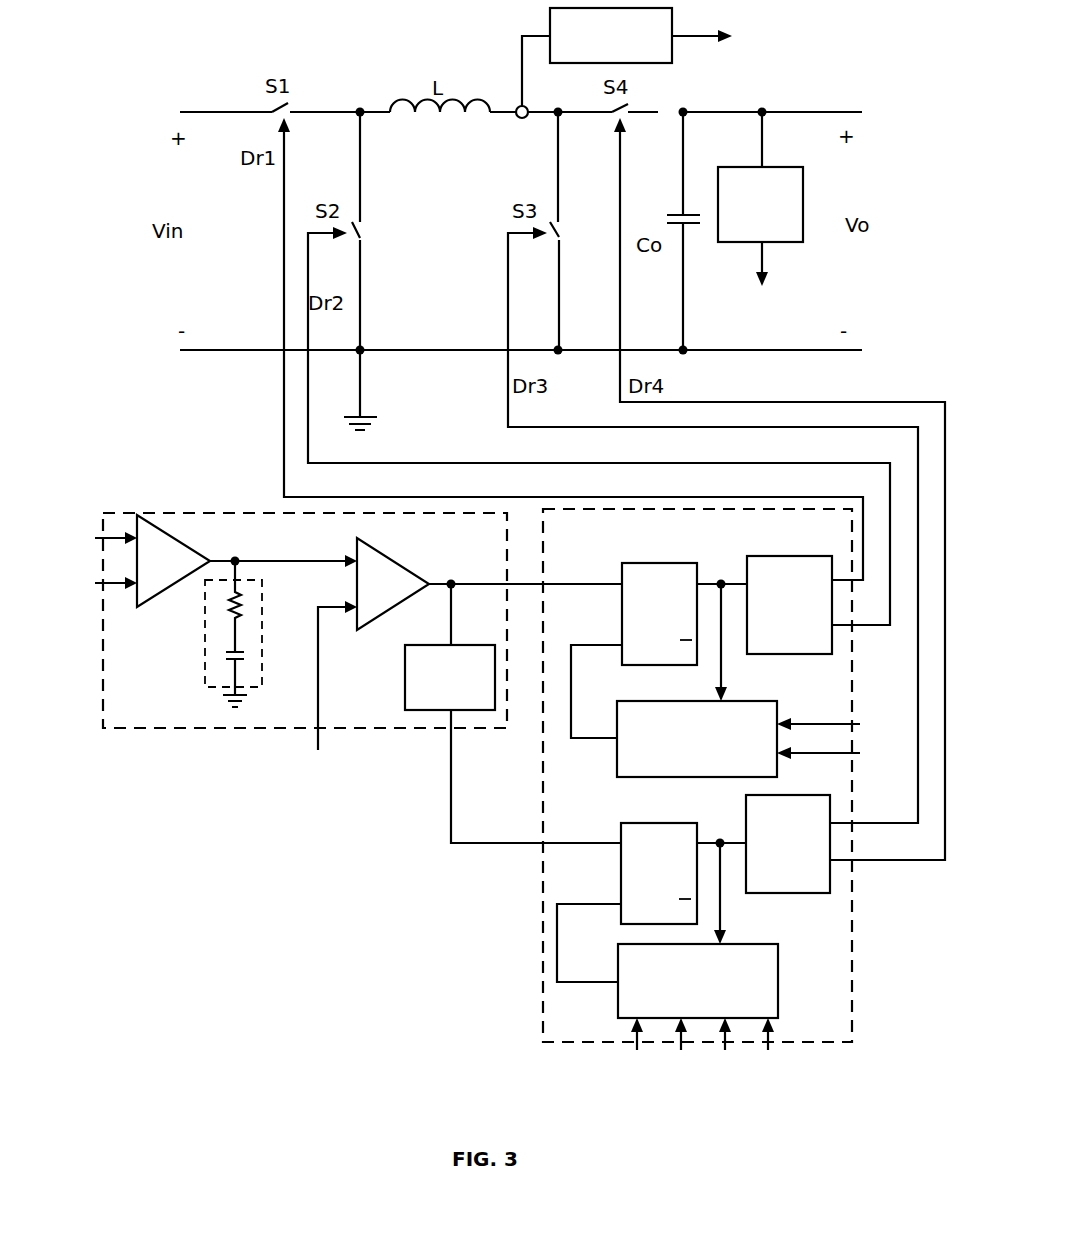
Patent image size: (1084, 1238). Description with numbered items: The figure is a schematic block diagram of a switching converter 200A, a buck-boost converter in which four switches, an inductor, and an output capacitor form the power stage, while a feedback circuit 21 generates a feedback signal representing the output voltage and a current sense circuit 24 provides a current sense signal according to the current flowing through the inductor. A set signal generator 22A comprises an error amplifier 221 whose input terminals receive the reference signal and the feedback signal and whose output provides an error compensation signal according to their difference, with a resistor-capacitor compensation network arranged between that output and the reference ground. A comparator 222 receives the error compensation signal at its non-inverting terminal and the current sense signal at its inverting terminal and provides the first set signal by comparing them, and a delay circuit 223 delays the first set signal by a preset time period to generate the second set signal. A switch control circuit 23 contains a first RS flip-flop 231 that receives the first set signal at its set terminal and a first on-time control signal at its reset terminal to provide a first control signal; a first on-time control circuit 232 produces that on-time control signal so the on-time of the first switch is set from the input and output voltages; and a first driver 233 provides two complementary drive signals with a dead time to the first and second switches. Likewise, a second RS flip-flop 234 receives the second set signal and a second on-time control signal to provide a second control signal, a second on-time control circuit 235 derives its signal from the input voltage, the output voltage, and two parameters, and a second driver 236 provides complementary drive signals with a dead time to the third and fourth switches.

The switching converter 200A is at (830, 78).
The current sense circuit 24 is at (649, 57).
The feedback circuit 21 is at (760, 213).
The set signal generator 22A is at (162, 513).
The error amplifier 221 is at (130, 561).
The comparator 222 is at (393, 584).
The delay circuit 223 is at (513, 713).
The switch control circuit 23 is at (543, 935).
The RS flip-flop 231 is at (659, 614).
The on-time control circuit 232 is at (755, 739).
The driver 233 is at (789, 605).
The RS flip-flop 234 is at (659, 873).
The on-time control circuit 235 is at (696, 1012).
The driver 236 is at (788, 844).